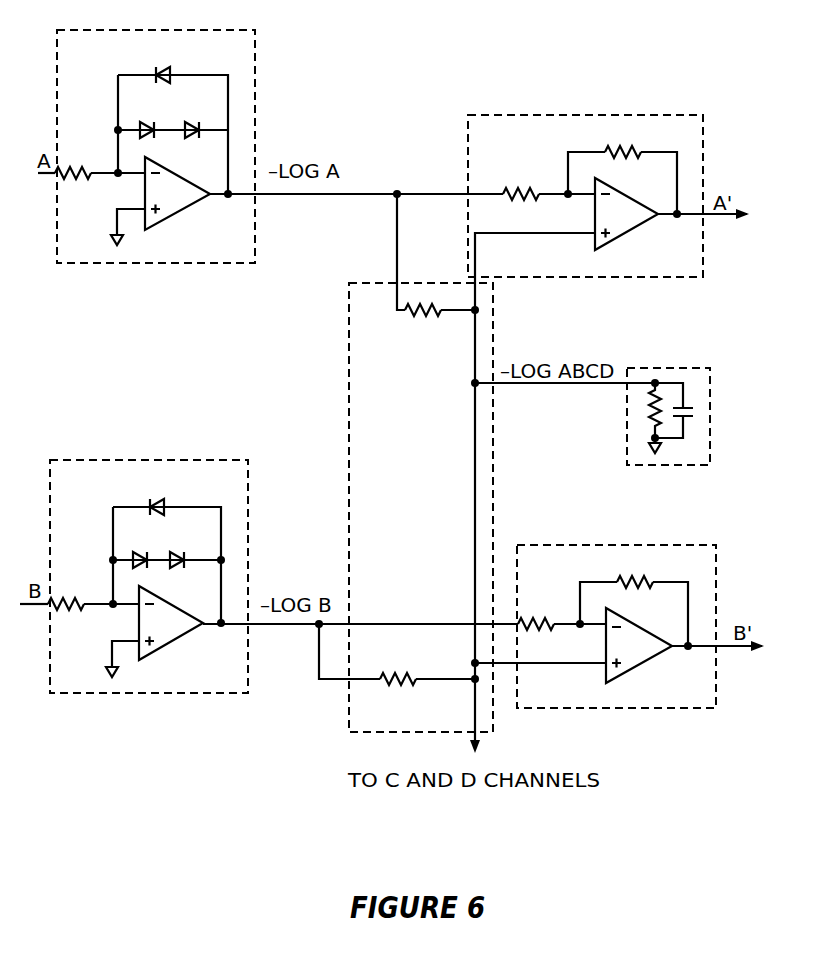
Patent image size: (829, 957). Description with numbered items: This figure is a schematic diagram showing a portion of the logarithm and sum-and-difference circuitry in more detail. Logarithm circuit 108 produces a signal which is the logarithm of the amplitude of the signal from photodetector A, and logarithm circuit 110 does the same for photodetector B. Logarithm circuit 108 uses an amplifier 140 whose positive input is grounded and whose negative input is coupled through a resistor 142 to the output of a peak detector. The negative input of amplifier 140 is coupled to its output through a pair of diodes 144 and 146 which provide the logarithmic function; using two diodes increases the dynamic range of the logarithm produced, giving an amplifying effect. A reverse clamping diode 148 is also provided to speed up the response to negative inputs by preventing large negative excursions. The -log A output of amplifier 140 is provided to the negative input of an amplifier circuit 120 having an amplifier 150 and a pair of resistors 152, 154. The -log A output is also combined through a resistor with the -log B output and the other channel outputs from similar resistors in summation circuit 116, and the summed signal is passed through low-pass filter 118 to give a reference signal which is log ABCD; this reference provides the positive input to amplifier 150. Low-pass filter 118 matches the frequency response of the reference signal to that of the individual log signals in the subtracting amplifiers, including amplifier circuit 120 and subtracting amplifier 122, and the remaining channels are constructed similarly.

The logarithm circuit 108 is at (222, 30).
The logarithm circuit 110 is at (195, 460).
The summation circuit 116 is at (418, 283).
The low-pass filter 118 is at (690, 368).
The amplifier circuit 120 is at (703, 168).
The subtracting amplifier 122 is at (665, 545).
The amplifier 140 is at (168, 165).
The resistor 142 is at (70, 168).
The diode 144 is at (147, 121).
The diode 146 is at (196, 121).
The reverse clamping diode 148 is at (170, 67).
The amplifier 150 is at (612, 243).
The resistor 152 is at (615, 150).
The resistor 154 is at (515, 190).